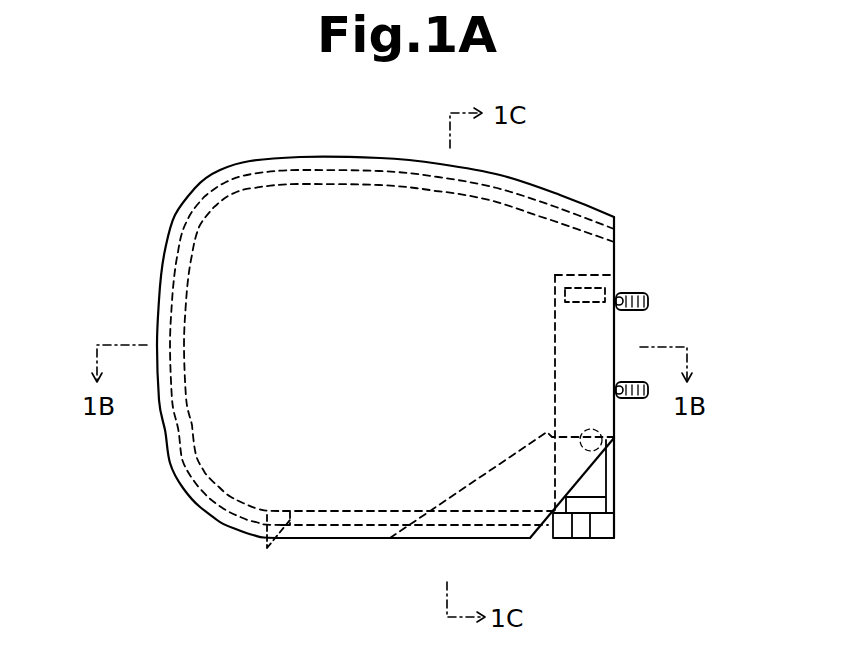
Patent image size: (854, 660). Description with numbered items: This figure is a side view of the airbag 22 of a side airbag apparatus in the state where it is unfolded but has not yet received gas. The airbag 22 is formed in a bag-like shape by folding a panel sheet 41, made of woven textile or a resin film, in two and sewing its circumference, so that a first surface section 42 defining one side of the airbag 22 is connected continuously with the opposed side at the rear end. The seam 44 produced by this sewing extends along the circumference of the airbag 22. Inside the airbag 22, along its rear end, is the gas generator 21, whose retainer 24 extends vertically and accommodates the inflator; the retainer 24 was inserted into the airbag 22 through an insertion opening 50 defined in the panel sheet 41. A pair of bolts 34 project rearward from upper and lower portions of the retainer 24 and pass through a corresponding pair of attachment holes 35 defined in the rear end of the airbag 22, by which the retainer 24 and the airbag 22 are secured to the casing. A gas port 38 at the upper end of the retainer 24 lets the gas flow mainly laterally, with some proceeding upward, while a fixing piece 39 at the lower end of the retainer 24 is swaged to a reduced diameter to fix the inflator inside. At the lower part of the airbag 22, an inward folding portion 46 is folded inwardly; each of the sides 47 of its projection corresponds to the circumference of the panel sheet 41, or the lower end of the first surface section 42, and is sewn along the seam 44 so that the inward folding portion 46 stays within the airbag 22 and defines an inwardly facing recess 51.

The gas generator 21 is at (555, 370).
The airbag 22 is at (188, 492).
The retainer 24 is at (575, 320).
The bolts 34 is at (650, 302).
The attachment holes 35 is at (614, 302).
The gas port 38 is at (604, 278).
The fixing piece 39 is at (583, 540).
The panel sheet 41 is at (575, 243).
The first surface section 42 is at (340, 515).
The seam 44 is at (267, 548).
The inward folding portion 46 is at (466, 478).
The sides 47 is at (455, 538).
The insertion opening 50 is at (613, 450).
The recess 51 is at (517, 495).